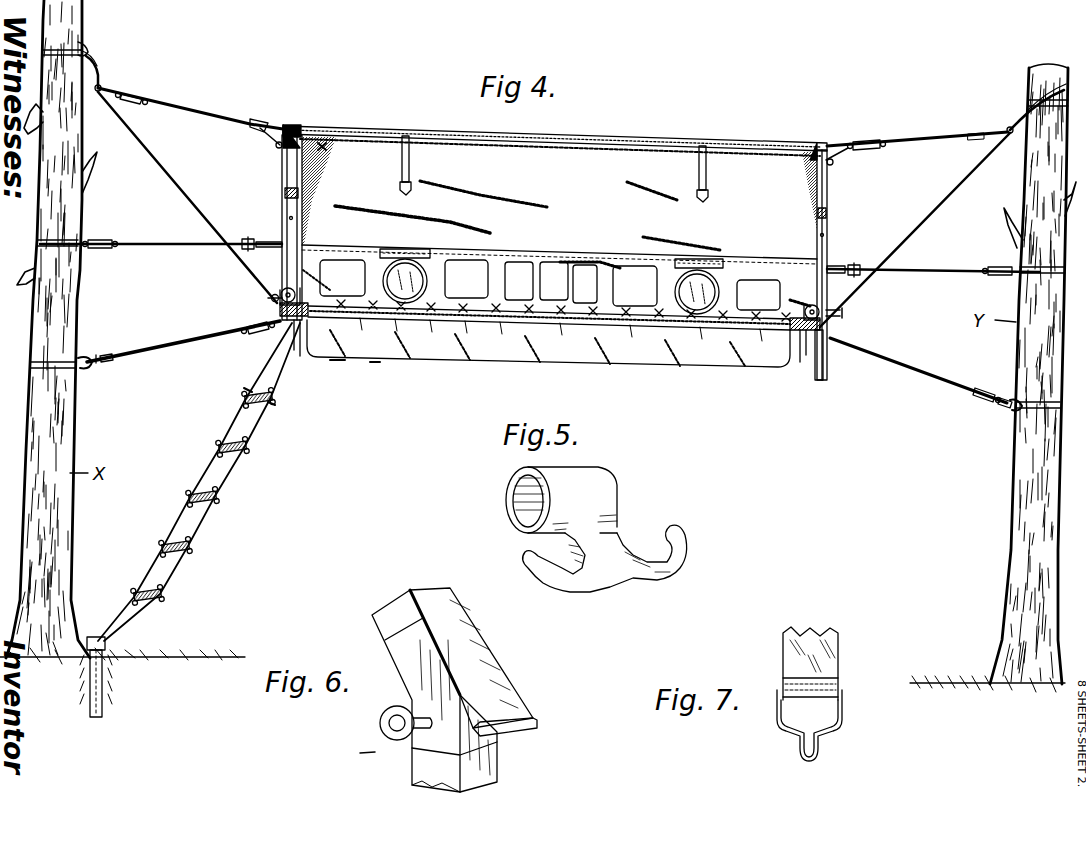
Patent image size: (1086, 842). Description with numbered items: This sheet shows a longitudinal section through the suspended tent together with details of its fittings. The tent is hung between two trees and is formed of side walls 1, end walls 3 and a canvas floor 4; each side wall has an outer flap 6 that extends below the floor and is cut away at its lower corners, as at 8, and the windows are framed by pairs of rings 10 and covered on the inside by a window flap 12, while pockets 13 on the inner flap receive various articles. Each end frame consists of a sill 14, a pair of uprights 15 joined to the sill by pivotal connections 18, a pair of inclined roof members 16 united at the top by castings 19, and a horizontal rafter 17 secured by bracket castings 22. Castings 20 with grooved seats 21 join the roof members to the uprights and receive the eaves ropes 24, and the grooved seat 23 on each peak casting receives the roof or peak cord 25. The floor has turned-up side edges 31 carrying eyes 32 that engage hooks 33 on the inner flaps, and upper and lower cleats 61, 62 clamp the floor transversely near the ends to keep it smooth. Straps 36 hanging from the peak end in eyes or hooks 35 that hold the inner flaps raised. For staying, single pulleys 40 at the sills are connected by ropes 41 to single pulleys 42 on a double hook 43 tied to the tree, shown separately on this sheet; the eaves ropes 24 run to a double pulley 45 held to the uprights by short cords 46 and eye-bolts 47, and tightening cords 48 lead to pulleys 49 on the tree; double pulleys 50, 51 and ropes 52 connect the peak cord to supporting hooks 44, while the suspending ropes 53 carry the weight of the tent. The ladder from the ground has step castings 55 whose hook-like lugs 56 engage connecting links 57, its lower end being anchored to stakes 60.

In FIG. 4, the side walls 1 is at (769, 368).
In FIG. 4, the end walls 3 is at (270, 300).
In FIG. 4, the floor 4 is at (705, 329).
In FIG. 4, the outer flap 6 is at (841, 314).
In FIG. 4, the cut-away lower corner 8 is at (818, 368).
In FIG. 4, the rings 10 is at (415, 284).
In FIG. 4, the window flap 12 is at (432, 255).
In FIG. 4, the pockets 13 is at (340, 262).
In FIG. 4, the sill 14 is at (300, 357).
In FIG. 6, the uprights 15 is at (497, 776).
In FIG. 4, the inclined roof members 16 is at (300, 175).
In FIG. 6, the inclined roof members 16 is at (452, 591).
In FIG. 4, the horizontal beam or rafter 17 is at (300, 190).
In FIG. 4, the pivotal connections 18 is at (292, 289).
In FIG. 4, the castings 19 is at (303, 150).
In FIG. 4, the castings 20 is at (302, 246).
In FIG. 6, the castings 20 is at (478, 662).
In FIG. 6, the grooved seats 21 is at (517, 733).
In FIG. 4, the bracket castings 22 is at (303, 210).
In FIG. 4, the grooved seat 23 is at (306, 140).
In FIG. 4, the eaves ropes 24 is at (263, 242).
In FIG. 4, the roof or peak cord 25 is at (290, 124).
In FIG. 4, the side edges of floor 31 is at (606, 316).
In FIG. 4, the eyes 32 is at (437, 319).
In FIG. 4, the hooks 33 is at (441, 319).
In FIG. 4, the eyes or hooks 35 is at (412, 190).
In FIG. 7, the eyes or hooks 35 is at (843, 707).
In FIG. 4, the straps 36 is at (411, 160).
In FIG. 7, the straps 36 is at (837, 657).
In FIG. 4, the single pulleys 40 is at (256, 334).
In FIG. 4, the ropes or cords 41 is at (178, 341).
In FIG. 4, the single pulleys 42 is at (110, 355).
In FIG. 4, the double hook 43 is at (90, 366).
In FIG. 5, the double hook 43 is at (607, 494).
In FIG. 4, the hooks 44 is at (100, 82).
In FIG. 4, the double pulley 45 is at (248, 238).
In FIG. 4, the short cords 46 is at (275, 137).
In FIG. 4, the eye-bolts 47 is at (278, 150).
In FIG. 6, the eye-bolts 47 is at (397, 734).
In FIG. 4, the tightening cords 48 is at (150, 242).
In FIG. 4, the pulleys 49 is at (108, 240).
In FIG. 4, the double pulley 50 is at (262, 119).
In FIG. 4, the double pulley 51 is at (134, 97).
In FIG. 4, the cords or ropes 52 is at (172, 105).
In FIG. 4, the suspending cords or ropes 53 is at (180, 181).
In FIG. 4, the castings 55 is at (272, 404).
In FIG. 4, the hook-like lugs 56 is at (274, 399).
In FIG. 4, the connecting links 57 is at (274, 394).
In FIG. 4, the stakes 60 is at (104, 679).
In FIG. 4, the upper cleats 61 is at (355, 306).
In FIG. 4, the lower cleats 62 is at (335, 319).